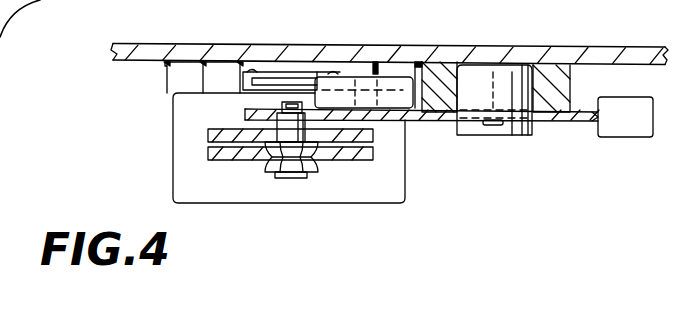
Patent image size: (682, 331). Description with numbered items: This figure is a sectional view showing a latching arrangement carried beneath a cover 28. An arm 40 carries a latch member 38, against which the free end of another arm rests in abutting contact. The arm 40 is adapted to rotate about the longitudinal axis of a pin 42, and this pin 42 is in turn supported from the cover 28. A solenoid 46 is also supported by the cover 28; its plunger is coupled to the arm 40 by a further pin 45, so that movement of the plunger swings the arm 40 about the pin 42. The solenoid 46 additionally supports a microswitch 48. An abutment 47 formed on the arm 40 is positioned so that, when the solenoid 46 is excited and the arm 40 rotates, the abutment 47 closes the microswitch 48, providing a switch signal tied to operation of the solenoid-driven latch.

The cover 28 is at (183, 14).
The latch member 38 is at (624, 138).
The arm 40 is at (454, 120).
The pin 42 is at (512, 136).
The pin 45 is at (288, 125).
The solenoid 46 is at (331, 190).
The abutment 47 is at (393, 80).
The microswitch 48 is at (298, 72).